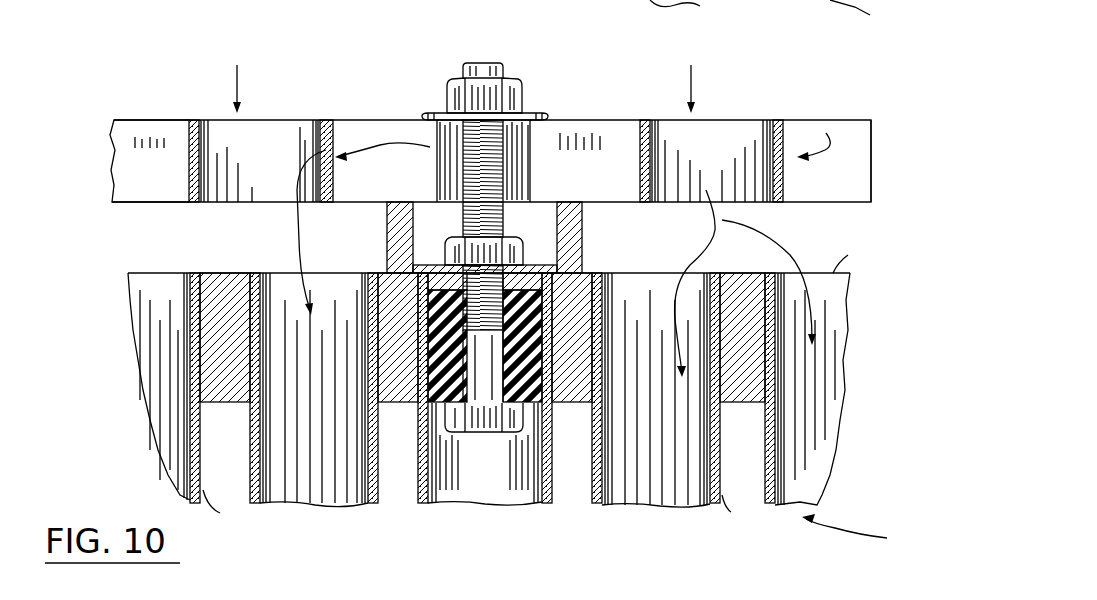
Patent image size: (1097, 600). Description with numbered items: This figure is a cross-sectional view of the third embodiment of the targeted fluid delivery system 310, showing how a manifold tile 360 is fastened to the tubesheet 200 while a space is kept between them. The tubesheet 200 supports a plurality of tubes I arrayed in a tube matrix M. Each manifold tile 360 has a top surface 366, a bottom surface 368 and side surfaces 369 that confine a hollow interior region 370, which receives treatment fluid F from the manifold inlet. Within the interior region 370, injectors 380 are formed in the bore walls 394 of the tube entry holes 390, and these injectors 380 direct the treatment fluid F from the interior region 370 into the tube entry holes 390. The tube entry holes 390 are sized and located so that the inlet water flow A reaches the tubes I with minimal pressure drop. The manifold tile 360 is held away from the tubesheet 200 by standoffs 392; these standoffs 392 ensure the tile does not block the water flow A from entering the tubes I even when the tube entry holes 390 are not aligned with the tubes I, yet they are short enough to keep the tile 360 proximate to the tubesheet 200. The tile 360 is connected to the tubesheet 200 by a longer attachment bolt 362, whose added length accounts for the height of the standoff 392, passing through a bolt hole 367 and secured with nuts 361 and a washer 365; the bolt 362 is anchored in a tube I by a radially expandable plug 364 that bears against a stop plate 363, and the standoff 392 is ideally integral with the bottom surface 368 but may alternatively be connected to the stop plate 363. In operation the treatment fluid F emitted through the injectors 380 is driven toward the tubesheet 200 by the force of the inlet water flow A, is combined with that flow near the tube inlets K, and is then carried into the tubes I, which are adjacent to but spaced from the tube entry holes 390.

The targeted fluid delivery system 310 is at (170, 60).
The hollow interior region 370 is at (168, 185).
The top surface 366 is at (141, 118).
The bottom surface 368 is at (140, 203).
The side surfaces 369 is at (871, 150).
The injectors 380 is at (716, 152).
The bore walls 394 is at (337, 118).
The tube entry holes 390 is at (293, 118).
The bolt hole 367 is at (437, 135).
The standoffs 392 is at (388, 224).
The stop plate 363 is at (545, 268).
The tubesheet 200 is at (218, 273).
The radially expandable plug 364 is at (551, 403).
The manifold tiles 360 is at (388, 118).
The washer 365 is at (536, 113).
The nuts 361 is at (516, 100).
The attachment bolt 362 is at (466, 68).
The inlet water flow A is at (464, 89).
The treatment fluid F is at (577, 255).
The tube inlets K is at (850, 259).
The tubes I is at (469, 510).
The tube matrix M is at (779, 275).